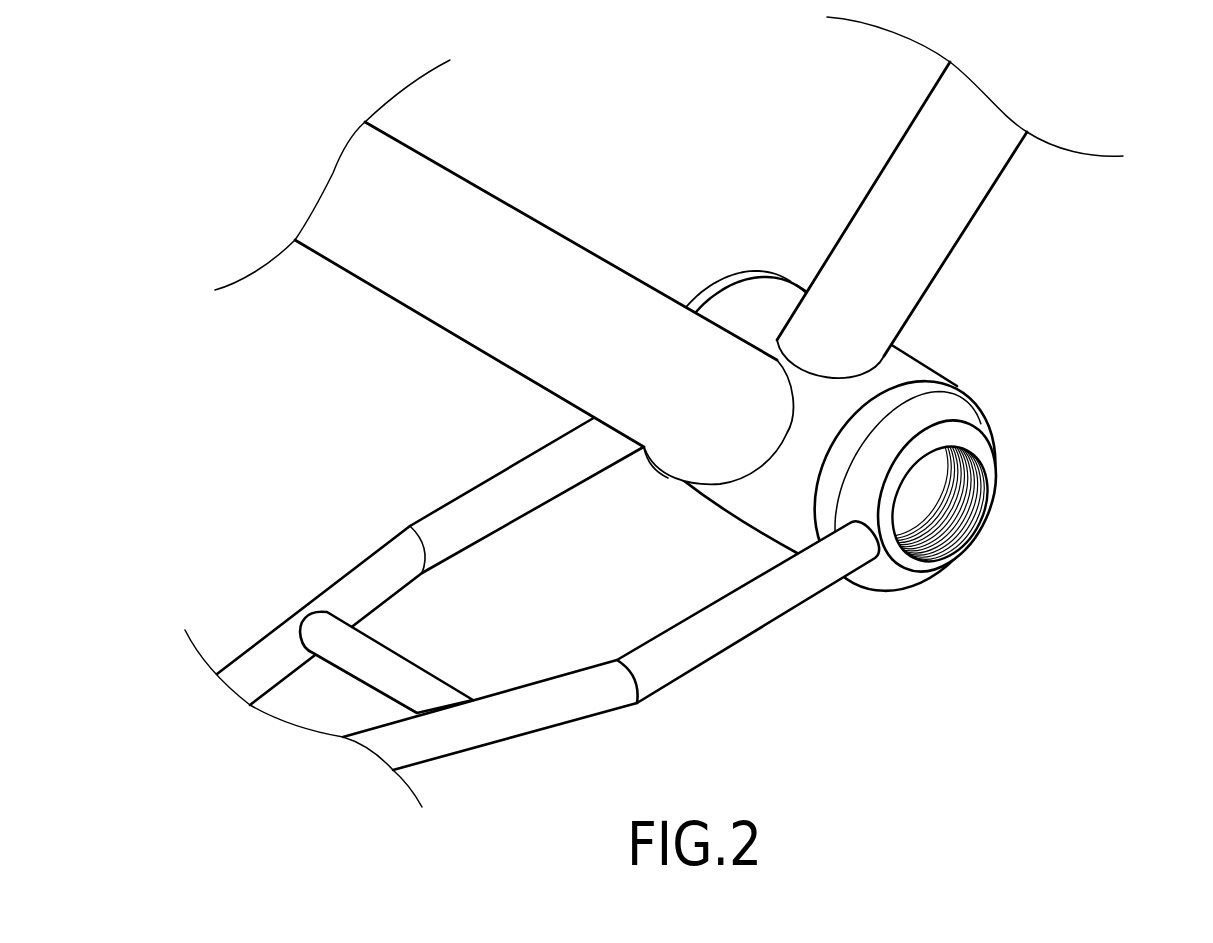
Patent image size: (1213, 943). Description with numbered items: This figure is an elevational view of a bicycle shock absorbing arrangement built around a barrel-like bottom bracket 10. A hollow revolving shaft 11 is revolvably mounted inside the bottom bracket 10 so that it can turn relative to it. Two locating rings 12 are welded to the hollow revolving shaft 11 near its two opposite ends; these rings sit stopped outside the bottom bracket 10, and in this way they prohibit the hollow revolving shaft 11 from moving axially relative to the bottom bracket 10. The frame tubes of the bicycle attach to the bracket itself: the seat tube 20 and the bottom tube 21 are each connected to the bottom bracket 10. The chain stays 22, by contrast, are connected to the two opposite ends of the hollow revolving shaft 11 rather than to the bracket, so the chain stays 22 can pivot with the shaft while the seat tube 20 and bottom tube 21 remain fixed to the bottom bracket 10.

The bottom bracket 10 is at (773, 487).
The hollow revolving shaft 11 is at (907, 447).
The locating rings 12 is at (730, 295).
The seat tube 20 is at (522, 270).
The bottom tube 21 is at (938, 173).
The chain stays 22 is at (500, 498).